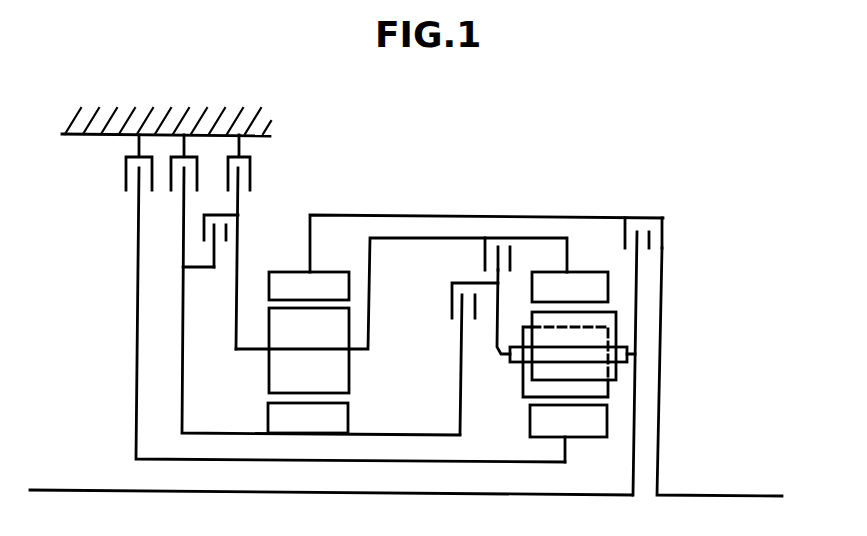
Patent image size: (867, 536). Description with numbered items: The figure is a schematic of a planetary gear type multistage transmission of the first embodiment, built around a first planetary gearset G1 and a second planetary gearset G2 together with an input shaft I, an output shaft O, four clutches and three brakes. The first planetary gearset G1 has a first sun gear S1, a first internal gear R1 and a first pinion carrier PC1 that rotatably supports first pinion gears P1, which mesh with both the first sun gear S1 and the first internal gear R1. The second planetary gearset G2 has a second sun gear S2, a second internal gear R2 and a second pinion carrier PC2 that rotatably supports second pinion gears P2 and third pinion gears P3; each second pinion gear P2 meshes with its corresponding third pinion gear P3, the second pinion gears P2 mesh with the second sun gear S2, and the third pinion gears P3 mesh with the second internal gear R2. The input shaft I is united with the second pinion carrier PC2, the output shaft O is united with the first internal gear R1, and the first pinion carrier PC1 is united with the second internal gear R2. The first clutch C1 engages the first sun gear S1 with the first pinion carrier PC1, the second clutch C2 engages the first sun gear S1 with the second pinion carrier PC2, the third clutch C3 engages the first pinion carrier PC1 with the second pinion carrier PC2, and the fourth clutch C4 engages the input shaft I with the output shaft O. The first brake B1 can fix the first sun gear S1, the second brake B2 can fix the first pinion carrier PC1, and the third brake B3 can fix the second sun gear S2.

The first brake B1 is at (174, 196).
The second brake B2 is at (257, 163).
The third brake B3 is at (129, 199).
The first clutch C1 is at (243, 229).
The second clutch C2 is at (447, 286).
The third clutch C3 is at (492, 237).
The fourth clutch C4 is at (659, 224).
The first planetary gearset G1 is at (294, 246).
The second planetary gearset G2 is at (595, 246).
The first internal gear R1 is at (323, 272).
The second internal gear R2 is at (608, 283).
The first pinion gears P1 is at (349, 367).
The second pinion gears P2 is at (521, 390).
The third pinion gears P3 is at (616, 322).
The first pinion carrier PC1 is at (242, 352).
The second pinion carrier PC2 is at (499, 355).
The first sun gear S1 is at (349, 414).
The second sun gear S2 is at (530, 421).
The input shaft I is at (86, 489).
The output shaft O is at (700, 493).